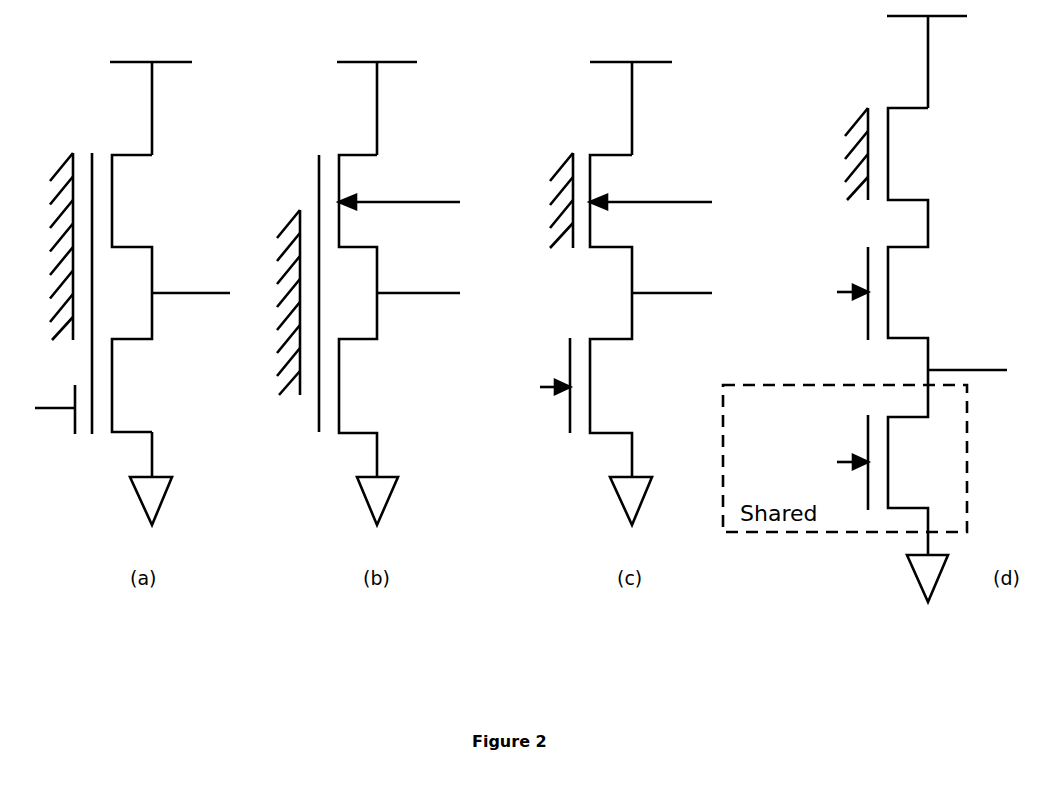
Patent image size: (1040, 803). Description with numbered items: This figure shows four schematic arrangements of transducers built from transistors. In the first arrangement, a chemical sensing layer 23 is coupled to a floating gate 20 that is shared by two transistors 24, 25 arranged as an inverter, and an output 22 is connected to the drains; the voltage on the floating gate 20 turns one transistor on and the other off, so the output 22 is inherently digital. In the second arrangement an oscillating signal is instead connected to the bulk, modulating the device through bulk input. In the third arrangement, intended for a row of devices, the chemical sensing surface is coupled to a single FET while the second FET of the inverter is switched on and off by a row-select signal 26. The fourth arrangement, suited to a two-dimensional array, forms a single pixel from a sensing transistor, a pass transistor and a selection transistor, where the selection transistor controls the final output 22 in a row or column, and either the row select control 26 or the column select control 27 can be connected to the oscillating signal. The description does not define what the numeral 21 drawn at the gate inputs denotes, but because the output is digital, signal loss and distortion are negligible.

The floating gate 20 is at (102, 276).
The gate input terminal 21 is at (370, 303).
The output 22 is at (583, 313).
The chemical sensing layer 23 is at (57, 221).
The transistor 24 is at (149, 224).
The transistor 25 is at (152, 362).
The row-select signal 26 is at (686, 424).
The column select control 27 is at (834, 293).